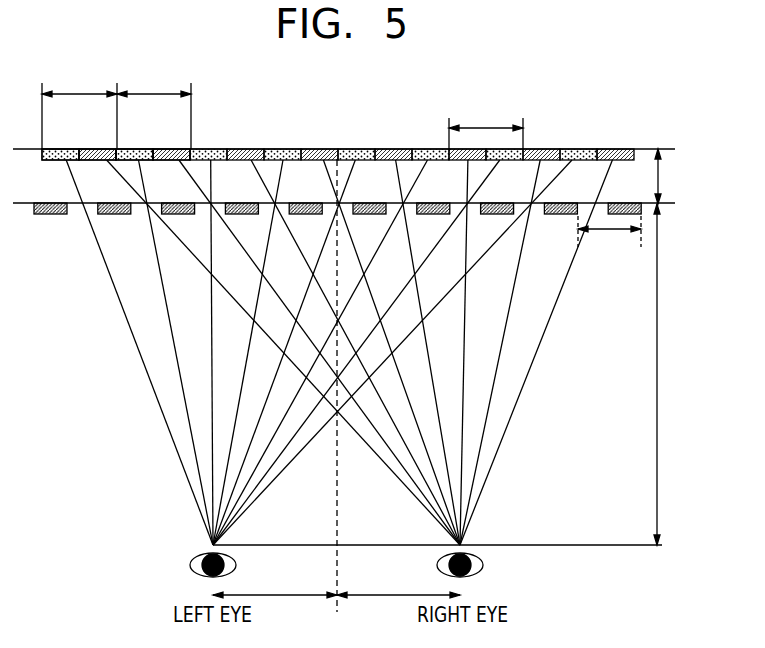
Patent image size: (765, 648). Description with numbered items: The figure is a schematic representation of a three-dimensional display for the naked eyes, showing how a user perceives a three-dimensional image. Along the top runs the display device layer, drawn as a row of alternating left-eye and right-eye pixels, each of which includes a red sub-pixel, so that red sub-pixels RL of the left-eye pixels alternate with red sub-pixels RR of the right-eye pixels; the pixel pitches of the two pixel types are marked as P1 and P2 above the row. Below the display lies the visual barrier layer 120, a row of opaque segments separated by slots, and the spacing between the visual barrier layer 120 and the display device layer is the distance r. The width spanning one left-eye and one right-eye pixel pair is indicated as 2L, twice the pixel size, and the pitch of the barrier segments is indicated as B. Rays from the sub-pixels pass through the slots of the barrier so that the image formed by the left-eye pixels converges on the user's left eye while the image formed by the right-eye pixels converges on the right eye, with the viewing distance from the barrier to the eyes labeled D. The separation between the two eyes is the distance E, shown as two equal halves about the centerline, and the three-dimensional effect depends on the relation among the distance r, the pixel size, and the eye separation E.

The visual barrier layer 120 is at (50, 215).
The pixel pitch P1 is at (79, 110).
The pixel pitch P2 is at (154, 110).
The red sub-pixel of the left-eye pixel RL is at (65, 148).
The red sub-pixel of the right-eye pixel RR is at (102, 148).
The pixel pair width 2L is at (486, 126).
The distance between the visual barrier layer and the display device layer r is at (664, 176).
The viewing distance D is at (667, 374).
The barrier pitch B is at (609, 234).
The distance between the left eye and the right eye E is at (290, 612).